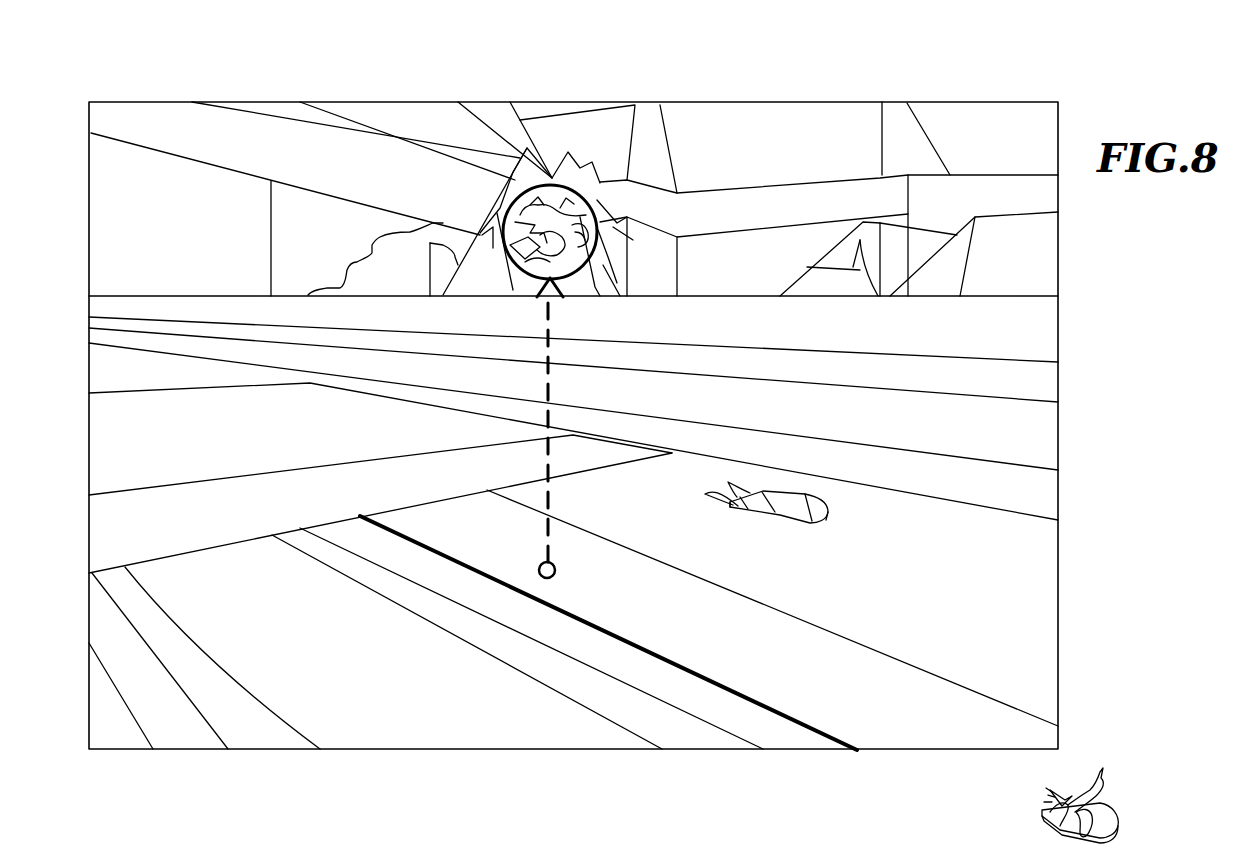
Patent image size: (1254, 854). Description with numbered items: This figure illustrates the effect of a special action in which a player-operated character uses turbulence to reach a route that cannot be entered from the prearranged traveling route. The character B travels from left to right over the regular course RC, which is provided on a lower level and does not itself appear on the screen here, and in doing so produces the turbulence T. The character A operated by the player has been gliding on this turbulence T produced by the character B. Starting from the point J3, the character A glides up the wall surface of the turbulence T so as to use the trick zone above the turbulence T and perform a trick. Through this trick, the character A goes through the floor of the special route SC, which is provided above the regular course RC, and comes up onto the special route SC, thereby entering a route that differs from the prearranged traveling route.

The character A is at (553, 225).
The special route SC is at (1017, 420).
The regular course RC is at (332, 705).
The point J3 is at (543, 580).
The turbulence T is at (808, 732).
The character B is at (1060, 826).